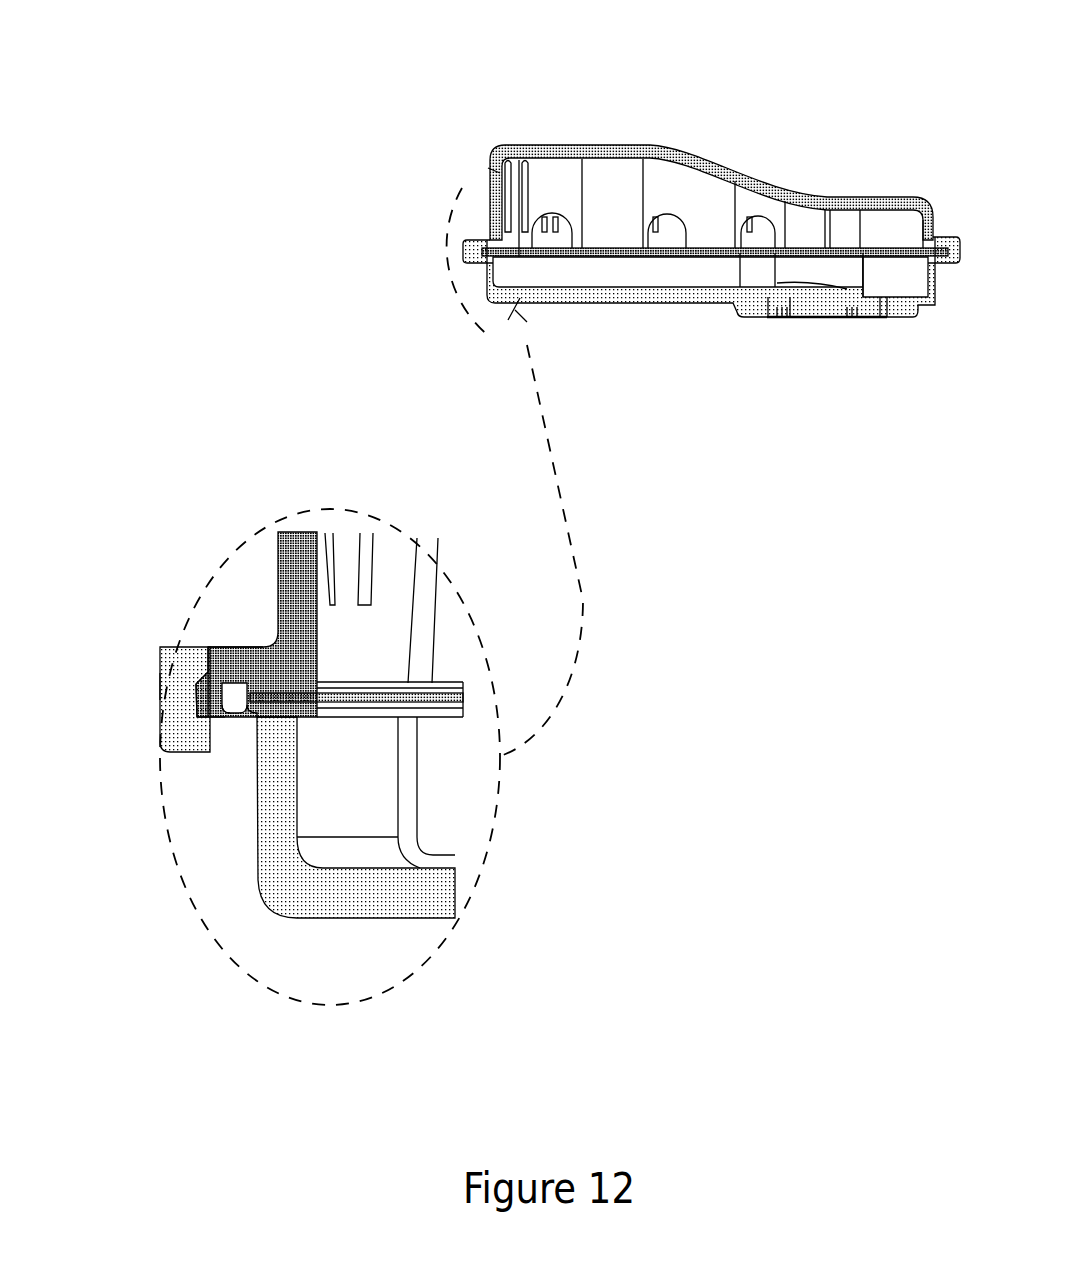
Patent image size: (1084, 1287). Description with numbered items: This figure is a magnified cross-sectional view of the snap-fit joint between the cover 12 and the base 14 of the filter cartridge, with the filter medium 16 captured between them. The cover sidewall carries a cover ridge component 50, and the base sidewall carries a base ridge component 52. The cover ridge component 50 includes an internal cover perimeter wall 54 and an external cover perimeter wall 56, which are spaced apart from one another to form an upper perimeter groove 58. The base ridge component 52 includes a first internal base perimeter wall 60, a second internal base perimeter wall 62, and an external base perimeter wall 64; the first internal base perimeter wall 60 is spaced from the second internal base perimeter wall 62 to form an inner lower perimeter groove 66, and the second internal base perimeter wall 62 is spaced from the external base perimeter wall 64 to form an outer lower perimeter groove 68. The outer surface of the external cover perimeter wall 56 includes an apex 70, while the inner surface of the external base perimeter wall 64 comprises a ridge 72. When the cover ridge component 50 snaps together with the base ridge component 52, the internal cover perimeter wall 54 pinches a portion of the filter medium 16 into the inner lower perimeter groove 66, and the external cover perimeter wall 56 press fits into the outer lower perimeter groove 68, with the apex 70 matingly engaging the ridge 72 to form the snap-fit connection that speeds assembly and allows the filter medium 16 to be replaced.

The cover 12 is at (628, 150).
The base 14 is at (695, 302).
The filter medium 16 is at (400, 697).
The cover ridge component 50 is at (227, 647).
The base ridge component 52 is at (182, 760).
The internal cover perimeter wall 54 is at (262, 700).
The external cover perimeter wall 56 is at (207, 715).
The upper perimeter groove 58 is at (233, 685).
The first internal base perimeter wall 60 is at (287, 712).
The second internal base perimeter wall 62 is at (247, 713).
The external base perimeter wall 64 is at (175, 705).
The inner lower perimeter groove 66 is at (260, 700).
The outer lower perimeter groove 68 is at (223, 713).
The apex 70 is at (185, 690).
The ridge 72 is at (180, 688).